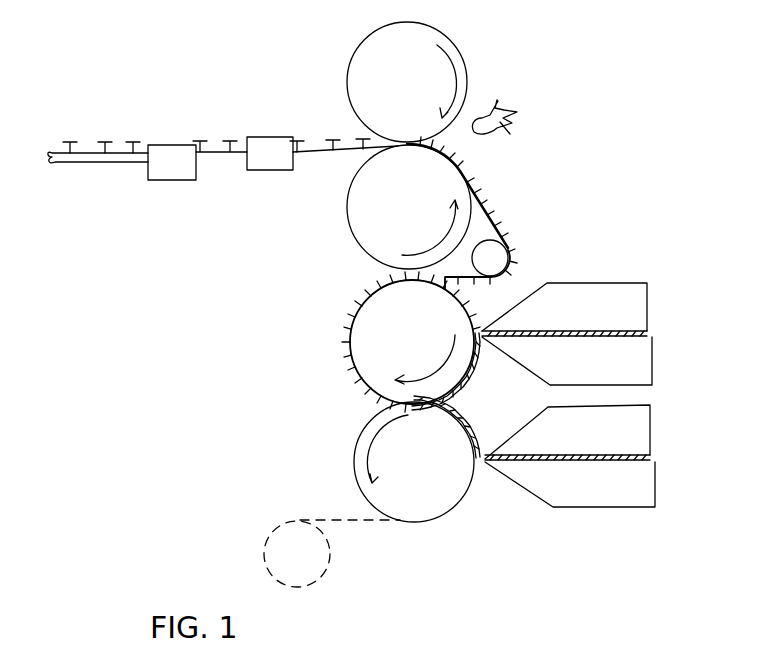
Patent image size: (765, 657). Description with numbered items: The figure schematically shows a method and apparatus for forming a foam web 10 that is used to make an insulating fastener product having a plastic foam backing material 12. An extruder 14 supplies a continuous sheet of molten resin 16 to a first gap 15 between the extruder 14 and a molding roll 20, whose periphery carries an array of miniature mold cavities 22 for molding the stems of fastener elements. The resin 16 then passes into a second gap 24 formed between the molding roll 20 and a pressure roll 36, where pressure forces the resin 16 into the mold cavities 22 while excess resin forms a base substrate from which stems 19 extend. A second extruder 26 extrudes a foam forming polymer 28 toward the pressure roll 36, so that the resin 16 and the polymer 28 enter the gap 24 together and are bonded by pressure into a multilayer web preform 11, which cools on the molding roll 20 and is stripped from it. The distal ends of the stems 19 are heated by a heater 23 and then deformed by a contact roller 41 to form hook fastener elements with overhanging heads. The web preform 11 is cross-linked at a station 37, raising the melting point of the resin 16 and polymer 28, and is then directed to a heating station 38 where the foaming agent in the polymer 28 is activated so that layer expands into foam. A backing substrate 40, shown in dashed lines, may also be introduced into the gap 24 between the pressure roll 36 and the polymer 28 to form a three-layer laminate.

The foam web 10 is at (72, 184).
The web preform 11 is at (319, 178).
The plastic foam backing material 12 is at (86, 154).
The extruder 14 is at (560, 297).
The first gap 15 is at (488, 320).
The molten resin 16 is at (640, 331).
The stems 19 is at (465, 173).
The molding roll 20 is at (354, 315).
The mold cavities 22 is at (366, 344).
The heater 23 is at (480, 118).
The second gap 24 is at (465, 401).
The second extruder 26 is at (337, 133).
The foam forming polymer 28 is at (645, 453).
The pressure roll 36 is at (445, 497).
The cross-linking station 37 is at (270, 150).
The heating station 38 is at (175, 160).
The backing substrate 40 is at (360, 523).
The contact roller 41 is at (380, 62).